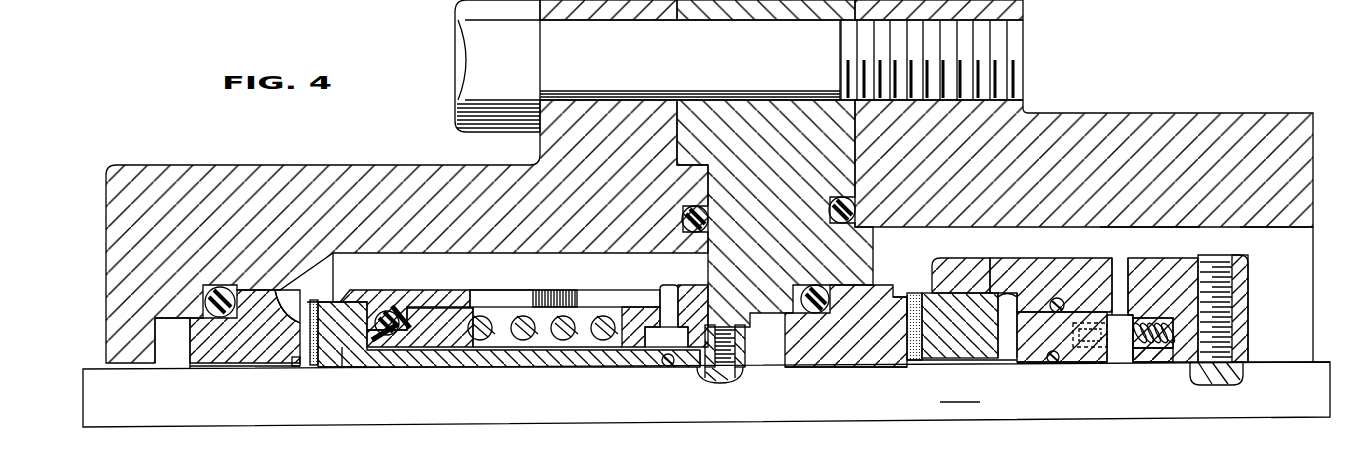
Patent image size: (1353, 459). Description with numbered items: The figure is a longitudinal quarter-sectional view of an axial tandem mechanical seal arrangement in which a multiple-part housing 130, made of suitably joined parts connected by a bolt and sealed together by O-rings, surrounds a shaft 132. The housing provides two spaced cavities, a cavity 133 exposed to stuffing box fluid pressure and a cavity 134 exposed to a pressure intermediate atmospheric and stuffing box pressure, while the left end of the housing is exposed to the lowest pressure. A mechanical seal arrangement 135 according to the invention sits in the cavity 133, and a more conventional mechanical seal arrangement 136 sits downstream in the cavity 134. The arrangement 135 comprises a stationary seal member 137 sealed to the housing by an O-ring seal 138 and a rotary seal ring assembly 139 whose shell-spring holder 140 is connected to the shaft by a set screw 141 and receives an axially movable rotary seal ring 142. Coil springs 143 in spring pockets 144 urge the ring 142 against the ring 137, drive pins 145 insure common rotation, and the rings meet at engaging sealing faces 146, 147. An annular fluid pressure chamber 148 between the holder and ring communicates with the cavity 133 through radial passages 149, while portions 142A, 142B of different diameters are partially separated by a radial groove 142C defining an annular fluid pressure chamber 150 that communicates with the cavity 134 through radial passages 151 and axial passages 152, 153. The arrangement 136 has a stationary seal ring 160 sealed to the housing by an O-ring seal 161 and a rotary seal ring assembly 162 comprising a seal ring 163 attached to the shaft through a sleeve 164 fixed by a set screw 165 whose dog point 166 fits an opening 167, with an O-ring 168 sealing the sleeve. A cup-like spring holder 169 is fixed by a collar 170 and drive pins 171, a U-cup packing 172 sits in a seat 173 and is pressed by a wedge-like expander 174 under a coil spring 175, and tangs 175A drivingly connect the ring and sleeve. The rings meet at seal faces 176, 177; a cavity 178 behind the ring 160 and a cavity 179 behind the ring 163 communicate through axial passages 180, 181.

The multiple-part housing 130 is at (1105, 130).
The shaft 132 is at (1267, 403).
The cavity 133 is at (1242, 226).
The cavity 134 is at (437, 245).
The mechanical seal arrangement 135 is at (959, 412).
The mechanical seal arrangement 136 is at (455, 410).
The stationary seal member 137 is at (858, 345).
The O-ring seal 138 is at (813, 286).
The rotary seal ring assembly 139 is at (998, 365).
The shell-spring holder 140 is at (1127, 268).
The set screw 141 is at (1217, 318).
The rotary seal ring 142 is at (985, 300).
The portion of rotary seal ring 142A is at (960, 325).
The portion of rotary seal ring 142B is at (1073, 348).
The radial groove 142C is at (1016, 297).
The coil springs 143 is at (1160, 345).
The spring pockets 144 is at (1153, 322).
The drive pins 145 is at (1100, 345).
The sealing face 146 is at (920, 360).
The sealing face 147 is at (900, 318).
The annular fluid pressure chamber 148 is at (1123, 360).
The radial passages 149 is at (1180, 178).
The annular fluid pressure chamber 150 is at (1055, 272).
The radial passages 151 is at (1012, 355).
The axial passage 152 is at (972, 364).
The axial passage 153 is at (826, 366).
The stationary seal ring 160 is at (243, 340).
The O-ring seal 161 is at (219, 287).
The rotary seal ring assembly 162 is at (400, 384).
The seal ring 163 is at (358, 292).
The sleeve 164 is at (612, 360).
The set screw 165 is at (710, 362).
The dog point 166 is at (723, 372).
The opening 167 is at (707, 387).
The O-ring 168 is at (667, 368).
The cup-like spring holder 169 is at (615, 297).
The collar 170 is at (707, 310).
The drive pins 171 is at (669, 287).
The U-cup packing 172 is at (385, 310).
The seat 173 is at (400, 305).
The wedge-like expander 174 is at (455, 332).
The coil spring 175 is at (562, 337).
The tangs 175A is at (450, 290).
The seal face 176 is at (311, 368).
The seal face 177 is at (290, 300).
The cavity 178 is at (168, 362).
The cavity 179 is at (352, 372).
The axial passage 180 is at (207, 368).
The axial passage 181 is at (318, 368).